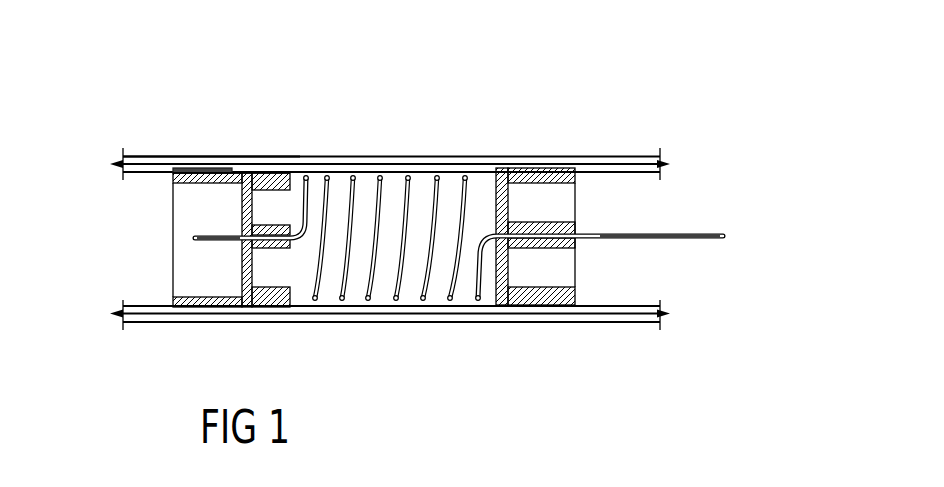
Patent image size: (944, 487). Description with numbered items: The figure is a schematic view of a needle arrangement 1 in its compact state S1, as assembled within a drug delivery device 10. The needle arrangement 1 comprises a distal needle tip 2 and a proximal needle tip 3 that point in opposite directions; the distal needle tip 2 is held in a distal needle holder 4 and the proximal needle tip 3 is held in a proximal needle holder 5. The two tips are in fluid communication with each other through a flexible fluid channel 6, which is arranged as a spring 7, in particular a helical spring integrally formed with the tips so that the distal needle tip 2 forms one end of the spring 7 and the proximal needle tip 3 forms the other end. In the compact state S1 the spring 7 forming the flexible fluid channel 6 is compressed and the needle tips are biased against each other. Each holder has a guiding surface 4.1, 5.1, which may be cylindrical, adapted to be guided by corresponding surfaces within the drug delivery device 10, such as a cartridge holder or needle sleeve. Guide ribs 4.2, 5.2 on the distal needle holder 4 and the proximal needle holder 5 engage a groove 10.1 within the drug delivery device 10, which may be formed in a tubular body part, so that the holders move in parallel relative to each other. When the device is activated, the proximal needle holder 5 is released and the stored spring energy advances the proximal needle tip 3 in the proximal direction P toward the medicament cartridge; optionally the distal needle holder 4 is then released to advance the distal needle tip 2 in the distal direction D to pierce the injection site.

The needle arrangement 1 is at (238, 110).
The distal needle tip 2 is at (710, 233).
The proximal needle tip 3 is at (192, 237).
The distal needle holder 4 is at (548, 224).
The guiding surface 4.1 is at (505, 172).
The guide rib 4.2 is at (558, 170).
The proximal needle holder 5 is at (235, 224).
The guiding surface 5.1 is at (258, 173).
The guide rib 5.2 is at (213, 167).
The flexible fluid channel 6 is at (390, 199).
The spring 7 is at (402, 195).
The drug delivery device 10 is at (637, 155).
The groove 10.1 is at (447, 170).
The compact state S1 is at (170, 148).
The proximal direction P is at (170, 242).
The distal direction D is at (689, 242).